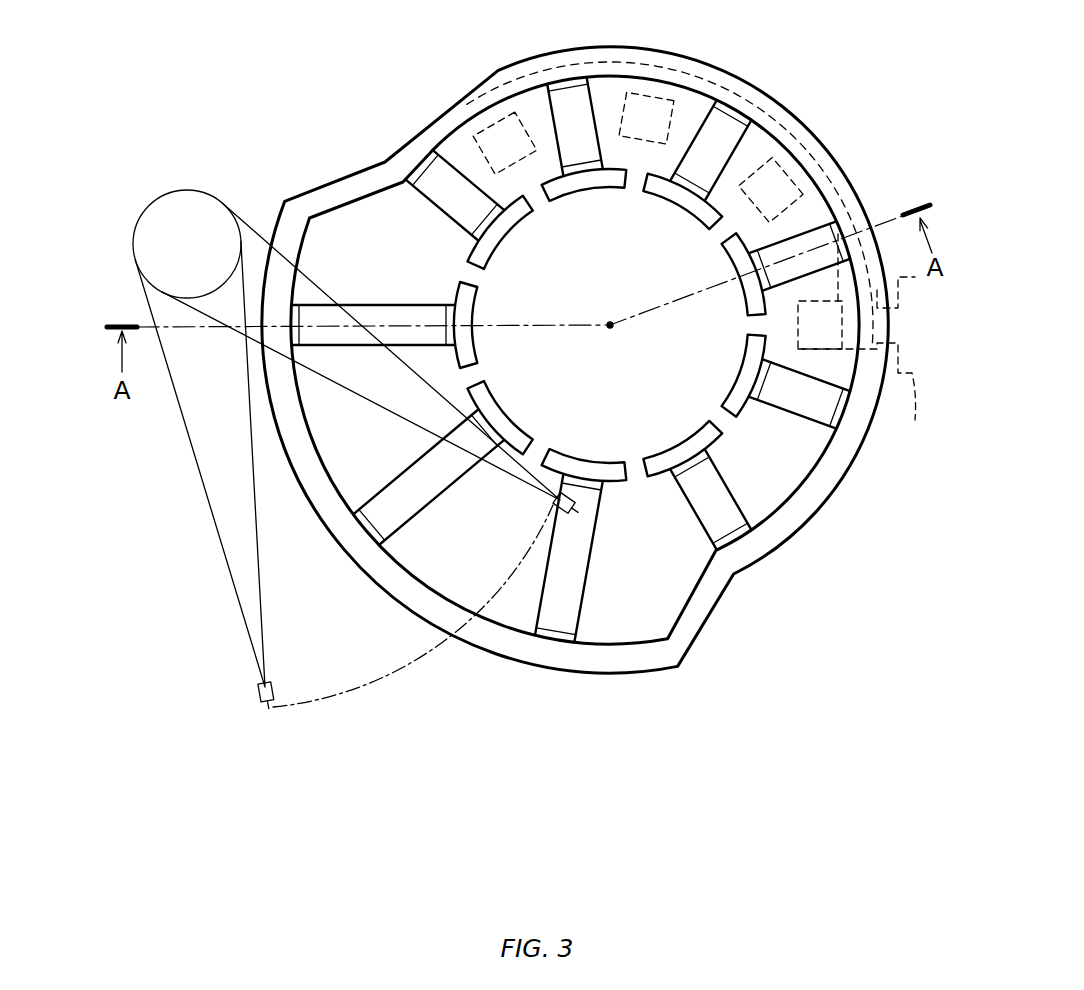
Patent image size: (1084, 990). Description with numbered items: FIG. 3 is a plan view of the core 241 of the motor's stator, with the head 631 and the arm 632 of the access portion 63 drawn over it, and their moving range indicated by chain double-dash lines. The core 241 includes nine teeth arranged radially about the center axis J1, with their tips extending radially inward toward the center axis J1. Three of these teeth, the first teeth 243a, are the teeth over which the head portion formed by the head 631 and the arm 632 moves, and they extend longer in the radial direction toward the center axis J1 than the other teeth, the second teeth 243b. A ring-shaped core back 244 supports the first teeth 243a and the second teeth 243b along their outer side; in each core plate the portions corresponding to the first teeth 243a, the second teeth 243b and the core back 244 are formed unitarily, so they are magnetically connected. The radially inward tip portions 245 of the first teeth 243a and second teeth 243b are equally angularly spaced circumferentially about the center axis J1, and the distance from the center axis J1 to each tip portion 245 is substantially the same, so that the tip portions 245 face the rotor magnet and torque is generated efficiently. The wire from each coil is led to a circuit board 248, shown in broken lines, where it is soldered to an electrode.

The core 241 is at (325, 63).
The first teeth 243a is at (387, 305).
The second teeth 243b is at (457, 107).
The core back 244 is at (705, 622).
The tip portions 245 is at (465, 319).
The circuit board 248 is at (867, 344).
The access portion 63 is at (320, 476).
The head 631 is at (262, 712).
The arm 632 is at (250, 652).
The center axis J1 is at (612, 333).